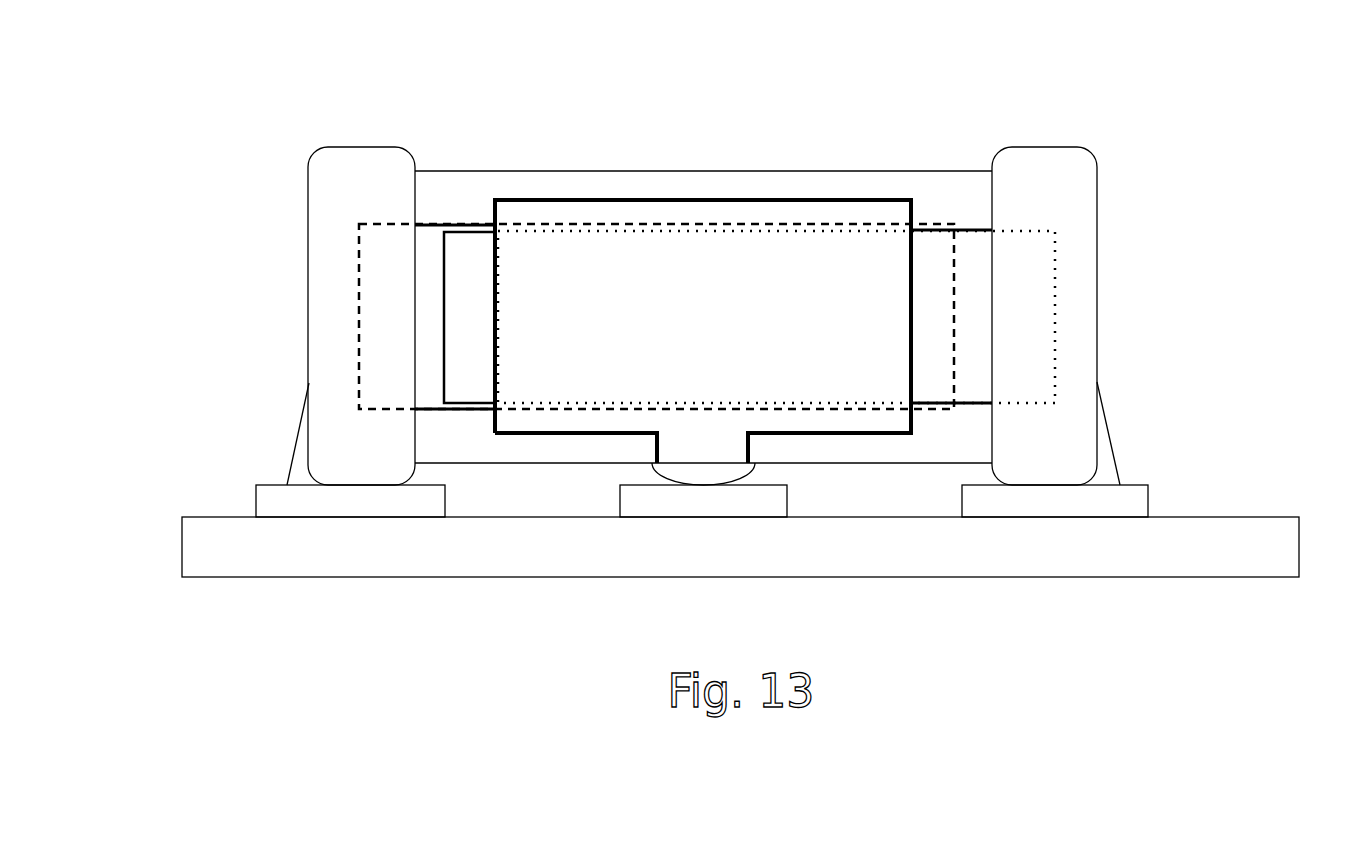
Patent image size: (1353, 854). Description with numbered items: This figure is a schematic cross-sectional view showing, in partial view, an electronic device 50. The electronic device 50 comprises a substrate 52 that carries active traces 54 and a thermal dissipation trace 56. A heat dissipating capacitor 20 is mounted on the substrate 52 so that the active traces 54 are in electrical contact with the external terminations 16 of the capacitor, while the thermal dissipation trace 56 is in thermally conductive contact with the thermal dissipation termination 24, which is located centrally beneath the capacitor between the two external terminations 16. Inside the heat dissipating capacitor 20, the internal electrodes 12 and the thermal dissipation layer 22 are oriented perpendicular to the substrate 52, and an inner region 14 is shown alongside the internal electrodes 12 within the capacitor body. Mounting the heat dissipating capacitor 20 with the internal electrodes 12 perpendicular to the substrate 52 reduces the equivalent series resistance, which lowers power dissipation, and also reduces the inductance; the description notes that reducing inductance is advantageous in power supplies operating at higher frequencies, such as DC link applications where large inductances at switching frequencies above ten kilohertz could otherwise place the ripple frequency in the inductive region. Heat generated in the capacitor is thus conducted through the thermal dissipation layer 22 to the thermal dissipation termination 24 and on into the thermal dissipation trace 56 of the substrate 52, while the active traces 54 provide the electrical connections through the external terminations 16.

The internal electrodes 12 is at (382, 224).
The inner electrode 14 is at (468, 204).
The external terminations 16 is at (352, 206).
The heat dissipating capacitor 20 is at (627, 171).
The thermal dissipation layer 22 is at (778, 200).
The thermal dissipation termination 24 is at (695, 475).
The electronic device 50 is at (1122, 282).
The substrate 52 is at (1237, 545).
The active traces 54 is at (417, 501).
The thermal dissipation trace 56 is at (755, 505).